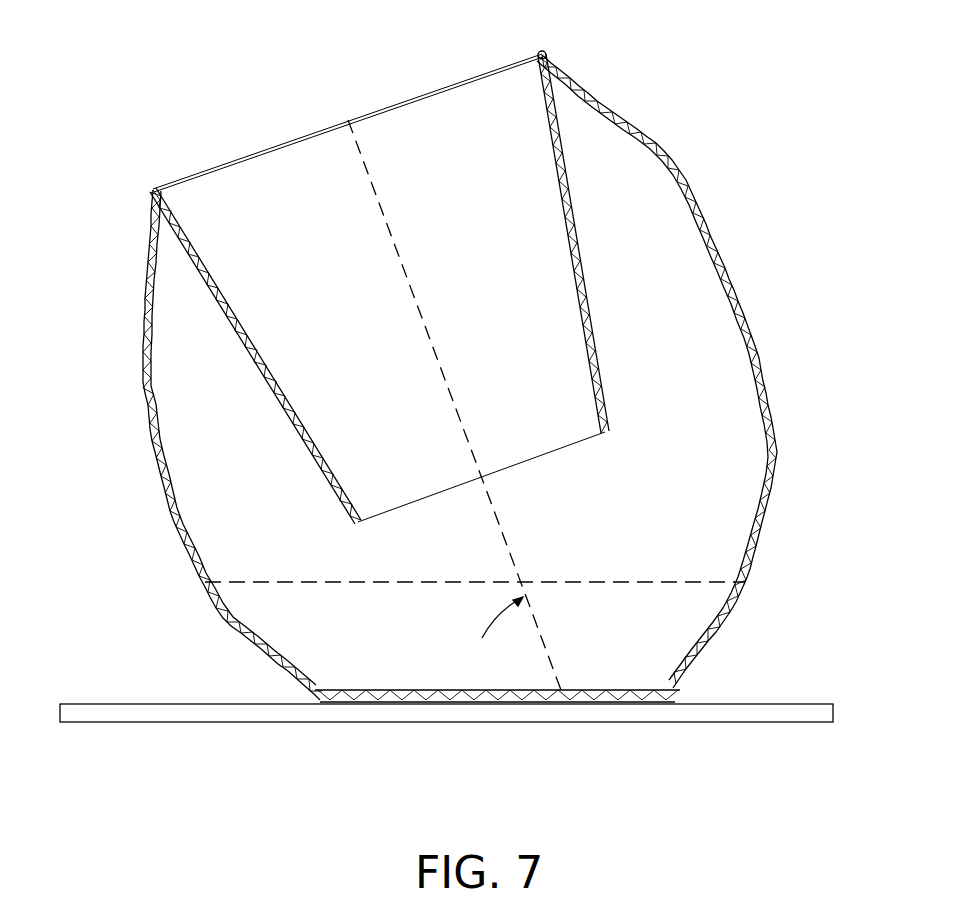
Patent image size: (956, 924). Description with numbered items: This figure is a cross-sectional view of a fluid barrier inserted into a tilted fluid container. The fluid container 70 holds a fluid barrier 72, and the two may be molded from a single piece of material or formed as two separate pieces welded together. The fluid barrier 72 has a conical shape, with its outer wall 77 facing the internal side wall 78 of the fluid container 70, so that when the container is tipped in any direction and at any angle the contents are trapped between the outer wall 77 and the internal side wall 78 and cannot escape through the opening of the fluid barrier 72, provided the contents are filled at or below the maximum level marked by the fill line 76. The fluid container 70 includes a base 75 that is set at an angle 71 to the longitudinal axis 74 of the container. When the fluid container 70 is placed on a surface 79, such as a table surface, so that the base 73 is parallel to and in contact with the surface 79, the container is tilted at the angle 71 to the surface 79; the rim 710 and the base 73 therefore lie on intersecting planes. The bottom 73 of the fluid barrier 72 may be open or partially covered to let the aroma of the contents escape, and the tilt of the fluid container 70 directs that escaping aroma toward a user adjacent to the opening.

The fluid container 70 is at (481, 378).
The angle 71 is at (454, 699).
The fluid barrier 72 is at (392, 350).
The base of the fluid container 73 is at (406, 506).
The longitudinal axis 74 is at (405, 275).
The base 75 is at (603, 690).
The fill line 76 is at (613, 578).
The outer wall of the fluid barrier 77 is at (585, 282).
The internal side wall of the fluid container 78 is at (712, 266).
The surface 79 is at (180, 722).
The rim 710 is at (545, 53).